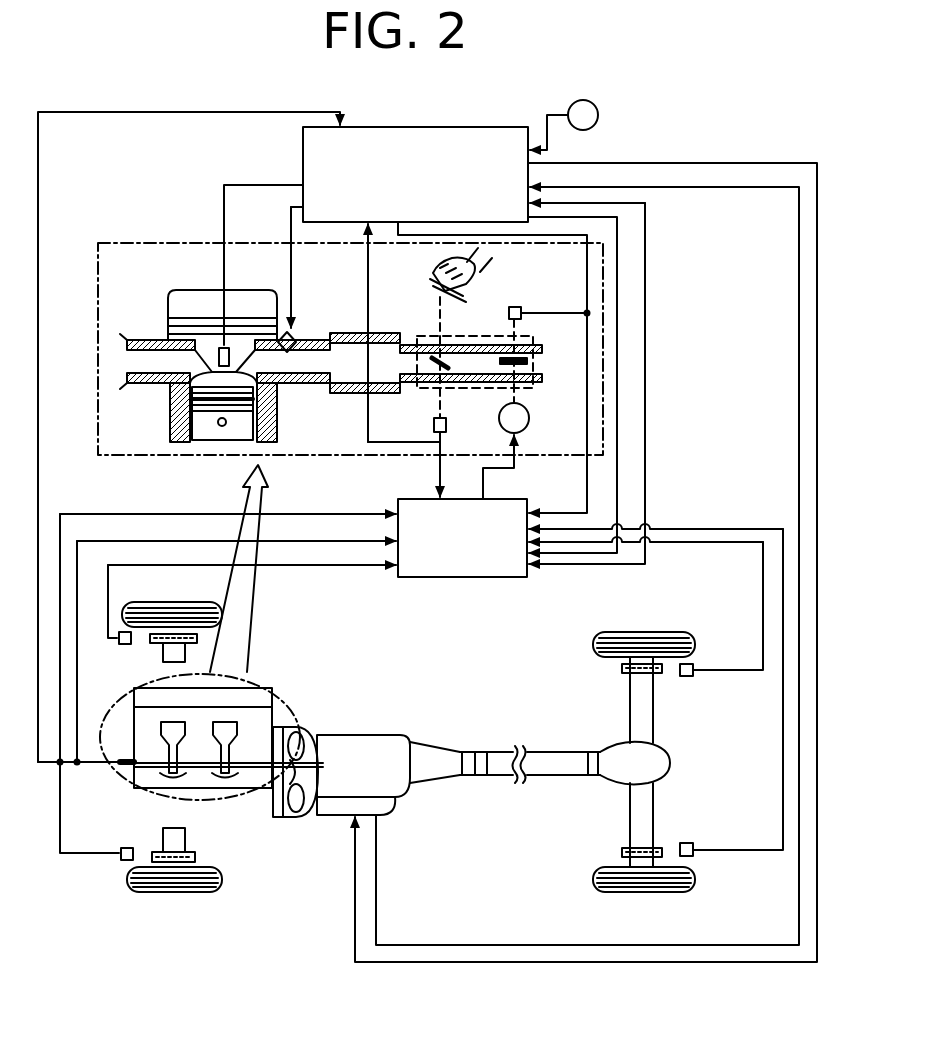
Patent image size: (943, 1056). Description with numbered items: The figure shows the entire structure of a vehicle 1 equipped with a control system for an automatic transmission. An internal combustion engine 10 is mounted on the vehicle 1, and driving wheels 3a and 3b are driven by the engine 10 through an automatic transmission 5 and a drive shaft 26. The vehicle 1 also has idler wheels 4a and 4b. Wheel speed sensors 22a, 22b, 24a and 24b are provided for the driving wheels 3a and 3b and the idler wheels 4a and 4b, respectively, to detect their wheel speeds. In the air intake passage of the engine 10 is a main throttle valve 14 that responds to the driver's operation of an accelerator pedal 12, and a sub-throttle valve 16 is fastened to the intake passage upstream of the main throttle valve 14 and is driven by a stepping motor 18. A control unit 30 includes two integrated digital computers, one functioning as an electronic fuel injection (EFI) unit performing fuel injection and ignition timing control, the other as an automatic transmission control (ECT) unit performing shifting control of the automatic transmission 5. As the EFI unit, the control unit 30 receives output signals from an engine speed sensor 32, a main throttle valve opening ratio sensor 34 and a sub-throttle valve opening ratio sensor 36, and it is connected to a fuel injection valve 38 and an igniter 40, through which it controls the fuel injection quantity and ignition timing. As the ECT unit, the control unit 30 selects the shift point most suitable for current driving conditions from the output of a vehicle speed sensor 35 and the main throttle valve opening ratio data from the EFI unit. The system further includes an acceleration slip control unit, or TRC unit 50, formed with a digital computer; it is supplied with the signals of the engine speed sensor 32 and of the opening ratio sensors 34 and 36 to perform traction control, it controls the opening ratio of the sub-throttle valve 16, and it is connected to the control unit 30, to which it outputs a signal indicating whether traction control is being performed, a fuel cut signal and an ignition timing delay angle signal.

The vehicle 1 is at (325, 824).
The driving wheel 3a is at (612, 632).
The driving wheel 3b is at (633, 895).
The idler wheel 4a is at (147, 602).
The idler wheel 4b is at (178, 893).
The automatic transmission 5 is at (355, 735).
The internal combustion engine 10 is at (128, 243).
The accelerator pedal 12 is at (430, 280).
The main throttle valve 14 is at (447, 360).
The sub-throttle valve 16 is at (528, 347).
The stepping motor 18 is at (530, 422).
The wheel speed sensor 22a is at (684, 678).
The wheel speed sensor 22b is at (687, 841).
The wheel speed sensor 24a is at (123, 645).
The wheel speed sensor 24b is at (97, 884).
The drive shaft 26 is at (547, 777).
The control unit 30 is at (415, 127).
The engine speed sensor 32 is at (120, 772).
The main throttle valve opening ratio sensor 34 is at (432, 424).
The vehicle speed sensor 35 is at (600, 113).
The sub-throttle valve opening ratio sensor 36 is at (522, 305).
The fuel injection valve 38 is at (300, 336).
The igniter 40 is at (226, 345).
The acceleration slip control unit (TRC unit) 50 is at (485, 521).